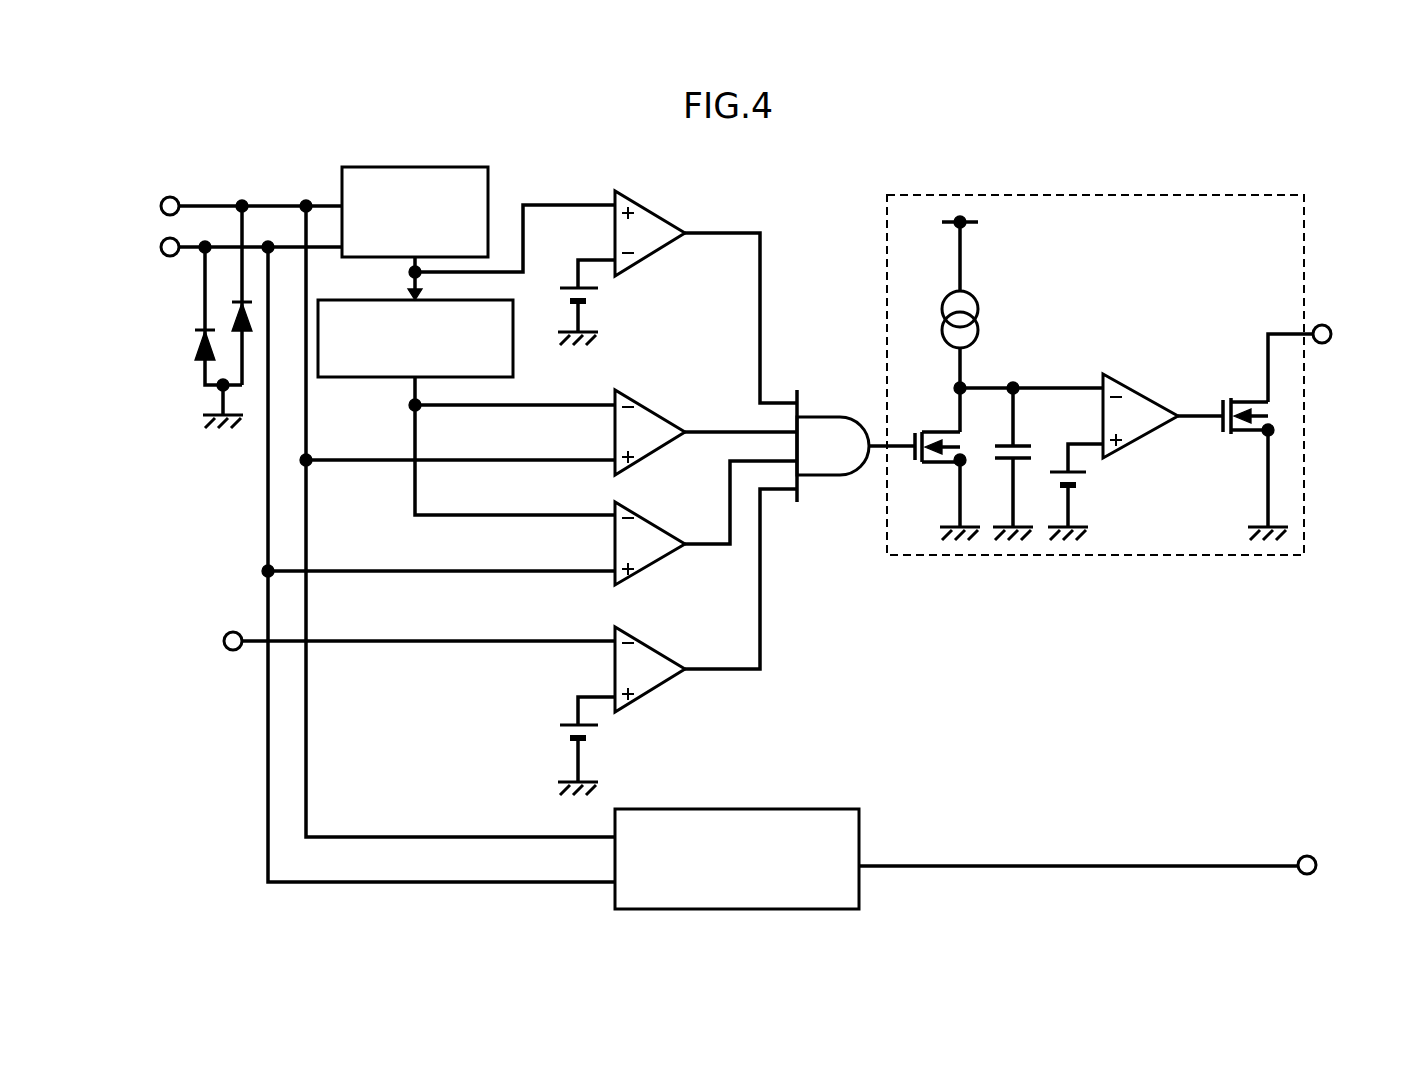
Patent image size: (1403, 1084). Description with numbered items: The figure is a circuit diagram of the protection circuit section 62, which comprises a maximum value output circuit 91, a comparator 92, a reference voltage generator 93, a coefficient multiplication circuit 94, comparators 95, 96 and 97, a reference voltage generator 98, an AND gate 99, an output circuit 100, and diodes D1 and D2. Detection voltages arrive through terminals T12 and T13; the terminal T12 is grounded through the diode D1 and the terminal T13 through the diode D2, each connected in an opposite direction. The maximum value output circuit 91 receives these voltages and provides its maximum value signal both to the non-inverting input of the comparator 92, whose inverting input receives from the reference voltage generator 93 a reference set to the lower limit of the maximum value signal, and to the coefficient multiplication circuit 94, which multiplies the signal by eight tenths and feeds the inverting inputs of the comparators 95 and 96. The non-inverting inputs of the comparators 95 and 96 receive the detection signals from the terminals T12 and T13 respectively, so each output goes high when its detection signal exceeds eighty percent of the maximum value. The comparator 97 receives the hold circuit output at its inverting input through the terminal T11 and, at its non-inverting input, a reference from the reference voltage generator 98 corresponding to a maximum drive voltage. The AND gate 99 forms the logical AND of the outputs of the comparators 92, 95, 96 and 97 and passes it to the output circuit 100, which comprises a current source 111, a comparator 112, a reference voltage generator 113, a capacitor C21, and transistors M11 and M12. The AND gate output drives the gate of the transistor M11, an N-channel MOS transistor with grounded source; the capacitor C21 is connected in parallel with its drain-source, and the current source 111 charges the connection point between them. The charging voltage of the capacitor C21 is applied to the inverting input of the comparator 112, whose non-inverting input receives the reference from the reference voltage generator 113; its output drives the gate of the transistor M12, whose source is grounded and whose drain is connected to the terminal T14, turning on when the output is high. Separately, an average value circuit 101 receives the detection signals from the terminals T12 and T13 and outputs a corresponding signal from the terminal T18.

The protection circuit section 62 is at (268, 115).
The maximum value output circuit 91 is at (340, 185).
The comparator 92 is at (640, 210).
The reference voltage generator 93 is at (598, 289).
The coefficient multiplication circuit 94 is at (388, 377).
The comparator 95 is at (657, 410).
The comparator 96 is at (660, 523).
The comparator 97 is at (660, 648).
The reference voltage generator 98 is at (558, 725).
The AND gate 99 is at (833, 415).
The output circuit 100 is at (940, 195).
The average value circuit 101 is at (817, 809).
The current source 111 is at (975, 322).
The comparator 112 is at (1136, 392).
The reference voltage generator 113 is at (1086, 473).
The terminal T11 is at (229, 634).
The terminal T12 is at (168, 200).
The terminal T13 is at (165, 252).
The terminal T14 is at (1325, 330).
The terminal T18 is at (1307, 863).
The diode D1 is at (232, 295).
The diode D2 is at (203, 337).
The capacitor C21 is at (1029, 461).
The transistor M11 is at (1005, 461).
The transistor M12 is at (1261, 437).